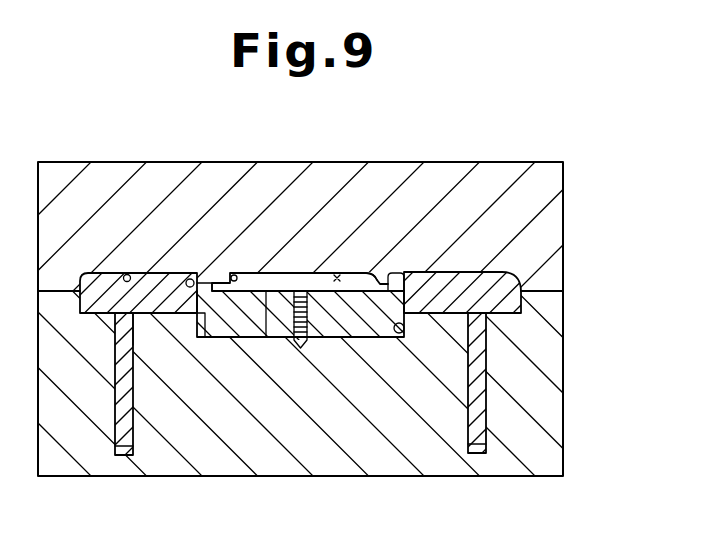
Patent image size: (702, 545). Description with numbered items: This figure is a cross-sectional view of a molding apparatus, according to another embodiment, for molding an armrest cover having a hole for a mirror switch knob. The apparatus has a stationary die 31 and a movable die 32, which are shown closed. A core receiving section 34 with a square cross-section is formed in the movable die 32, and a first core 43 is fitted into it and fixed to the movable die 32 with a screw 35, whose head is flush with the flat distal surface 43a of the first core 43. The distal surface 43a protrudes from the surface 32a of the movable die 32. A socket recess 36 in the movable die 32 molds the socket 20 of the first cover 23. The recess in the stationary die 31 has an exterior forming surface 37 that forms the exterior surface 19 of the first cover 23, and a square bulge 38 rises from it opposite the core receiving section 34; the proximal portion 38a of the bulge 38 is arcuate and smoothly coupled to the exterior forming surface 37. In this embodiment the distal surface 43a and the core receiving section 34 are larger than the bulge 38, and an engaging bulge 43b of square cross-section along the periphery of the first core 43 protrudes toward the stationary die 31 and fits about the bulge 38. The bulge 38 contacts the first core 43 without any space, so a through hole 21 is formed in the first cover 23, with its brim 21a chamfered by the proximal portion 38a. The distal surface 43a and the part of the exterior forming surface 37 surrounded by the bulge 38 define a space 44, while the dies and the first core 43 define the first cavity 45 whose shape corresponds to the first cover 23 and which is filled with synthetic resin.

The exterior surface 19 is at (470, 271).
The socket 20 is at (133, 397).
The through hole 21 is at (205, 300).
The brim 21a is at (212, 274).
The first cover 23 is at (521, 309).
The stationary die 31 is at (563, 180).
The movable die 32 is at (563, 412).
The surface 32a is at (133, 335).
The core receiving section 34 is at (398, 334).
The screw 35 is at (304, 349).
The socket recess 36 is at (124, 456).
The exterior forming surface 37 is at (128, 270).
The bulge 38 is at (236, 280).
The proximal portion 38a is at (376, 270).
The first core 43 is at (362, 333).
The distal surface 43a is at (266, 292).
The engaging bulge 43b is at (190, 278).
The space 44 is at (336, 276).
The first cavity 45 is at (84, 285).